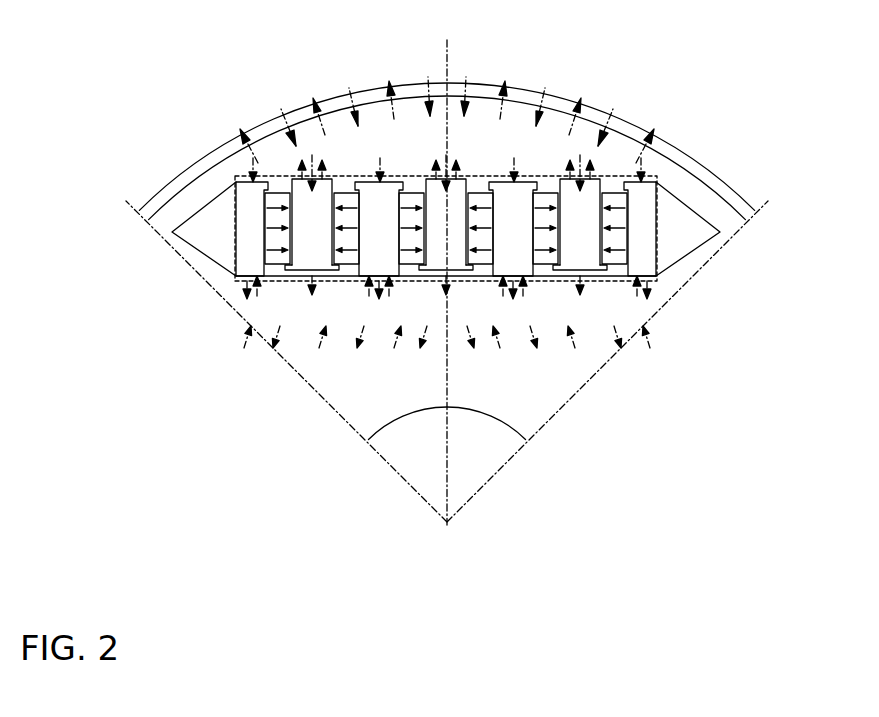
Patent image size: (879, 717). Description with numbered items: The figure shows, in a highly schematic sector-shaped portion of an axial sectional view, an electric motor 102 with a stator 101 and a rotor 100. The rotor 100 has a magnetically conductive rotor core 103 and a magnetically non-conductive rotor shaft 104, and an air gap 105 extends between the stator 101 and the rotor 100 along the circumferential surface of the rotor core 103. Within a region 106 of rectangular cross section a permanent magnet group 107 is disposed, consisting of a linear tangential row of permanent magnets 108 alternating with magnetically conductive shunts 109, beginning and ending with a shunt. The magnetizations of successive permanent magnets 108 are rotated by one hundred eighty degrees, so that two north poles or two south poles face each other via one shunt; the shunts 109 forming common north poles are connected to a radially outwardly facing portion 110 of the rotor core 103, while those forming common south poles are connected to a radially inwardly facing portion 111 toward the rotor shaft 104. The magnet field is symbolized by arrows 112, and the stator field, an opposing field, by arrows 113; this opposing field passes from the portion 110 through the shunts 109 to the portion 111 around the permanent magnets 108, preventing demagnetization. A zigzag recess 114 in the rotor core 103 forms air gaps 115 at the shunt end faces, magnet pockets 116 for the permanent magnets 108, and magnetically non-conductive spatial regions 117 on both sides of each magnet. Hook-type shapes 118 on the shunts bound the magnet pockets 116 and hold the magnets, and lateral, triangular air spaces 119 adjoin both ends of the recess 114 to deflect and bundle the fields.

The rotor 100 is at (710, 494).
The stator 101 is at (733, 130).
The electric motor 102 is at (190, 143).
The rotor core 103 is at (537, 393).
The rotor shaft 104 is at (419, 460).
The air gap 105 is at (737, 198).
The region 106 is at (465, 177).
The permanent magnet group 107 is at (495, 173).
The permanent magnets 108 is at (342, 198).
The magnetically conductive shunts 109 is at (317, 258).
The radially outwardly facing portion of the rotor core 110 is at (385, 127).
The radially inwardly facing portion of the rotor core 111 is at (340, 345).
The arrows 112 is at (240, 342).
The arrows (stator field / opposing field) 113 is at (583, 168).
The recess 114 is at (412, 185).
The air gaps 115 is at (458, 276).
The magnet pockets 116 is at (558, 271).
The magnetically non-conductive spatial regions 117 is at (494, 242).
The hook-type shapes 118 is at (652, 258).
The lateral, triangular air spaces 119 is at (213, 230).